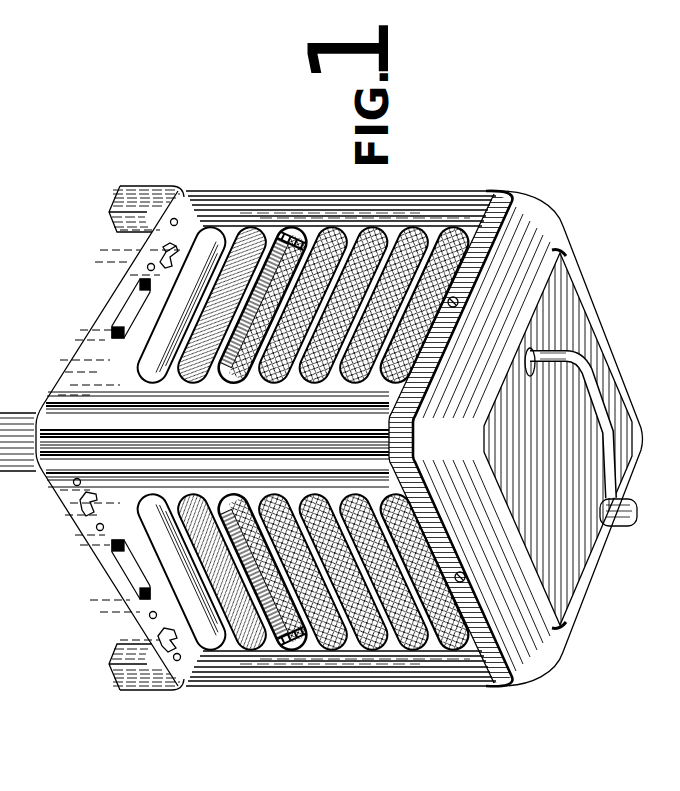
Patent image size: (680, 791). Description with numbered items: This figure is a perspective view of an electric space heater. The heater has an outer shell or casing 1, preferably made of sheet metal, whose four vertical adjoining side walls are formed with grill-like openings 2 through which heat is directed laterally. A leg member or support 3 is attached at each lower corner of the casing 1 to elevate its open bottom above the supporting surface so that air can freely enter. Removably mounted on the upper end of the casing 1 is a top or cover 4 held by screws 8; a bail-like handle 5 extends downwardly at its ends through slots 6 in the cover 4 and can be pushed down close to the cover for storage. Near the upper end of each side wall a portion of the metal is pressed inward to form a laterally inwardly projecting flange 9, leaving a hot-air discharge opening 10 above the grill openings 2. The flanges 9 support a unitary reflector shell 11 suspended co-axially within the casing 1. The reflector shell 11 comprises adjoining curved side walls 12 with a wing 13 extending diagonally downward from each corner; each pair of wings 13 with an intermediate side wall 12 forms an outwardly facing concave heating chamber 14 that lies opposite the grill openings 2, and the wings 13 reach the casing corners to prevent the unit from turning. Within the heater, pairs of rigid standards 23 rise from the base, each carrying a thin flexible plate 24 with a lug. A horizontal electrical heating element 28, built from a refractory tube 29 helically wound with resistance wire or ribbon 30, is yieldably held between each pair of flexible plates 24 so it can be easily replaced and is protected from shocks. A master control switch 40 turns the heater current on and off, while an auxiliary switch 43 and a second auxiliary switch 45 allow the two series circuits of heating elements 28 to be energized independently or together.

The outer shell or casing 1 is at (353, 680).
The grill-like openings 2 is at (413, 234).
The leg member or support 3 is at (128, 208).
The top or cover 4 is at (628, 507).
The bail-like handle 5 is at (596, 414).
The slots 6 is at (637, 513).
The screws 8 is at (465, 580).
The laterally inwardly projecting flange 9 is at (534, 349).
The opening 10 is at (457, 234).
The reflector shell 11 is at (405, 496).
The side walls 12 is at (253, 550).
The wing 13 is at (30, 472).
The concave heating chamber 14 is at (231, 363).
The standards 23 is at (273, 245).
The flexible plate 24 is at (313, 238).
The electrical heating element 28 is at (287, 238).
The refractory tubes 29 is at (250, 250).
The electrical resistance wire or ribbon 30 is at (252, 323).
The control switch 40 is at (176, 254).
The auxiliary switch 43 is at (179, 639).
The second auxiliary switch 45 is at (97, 503).